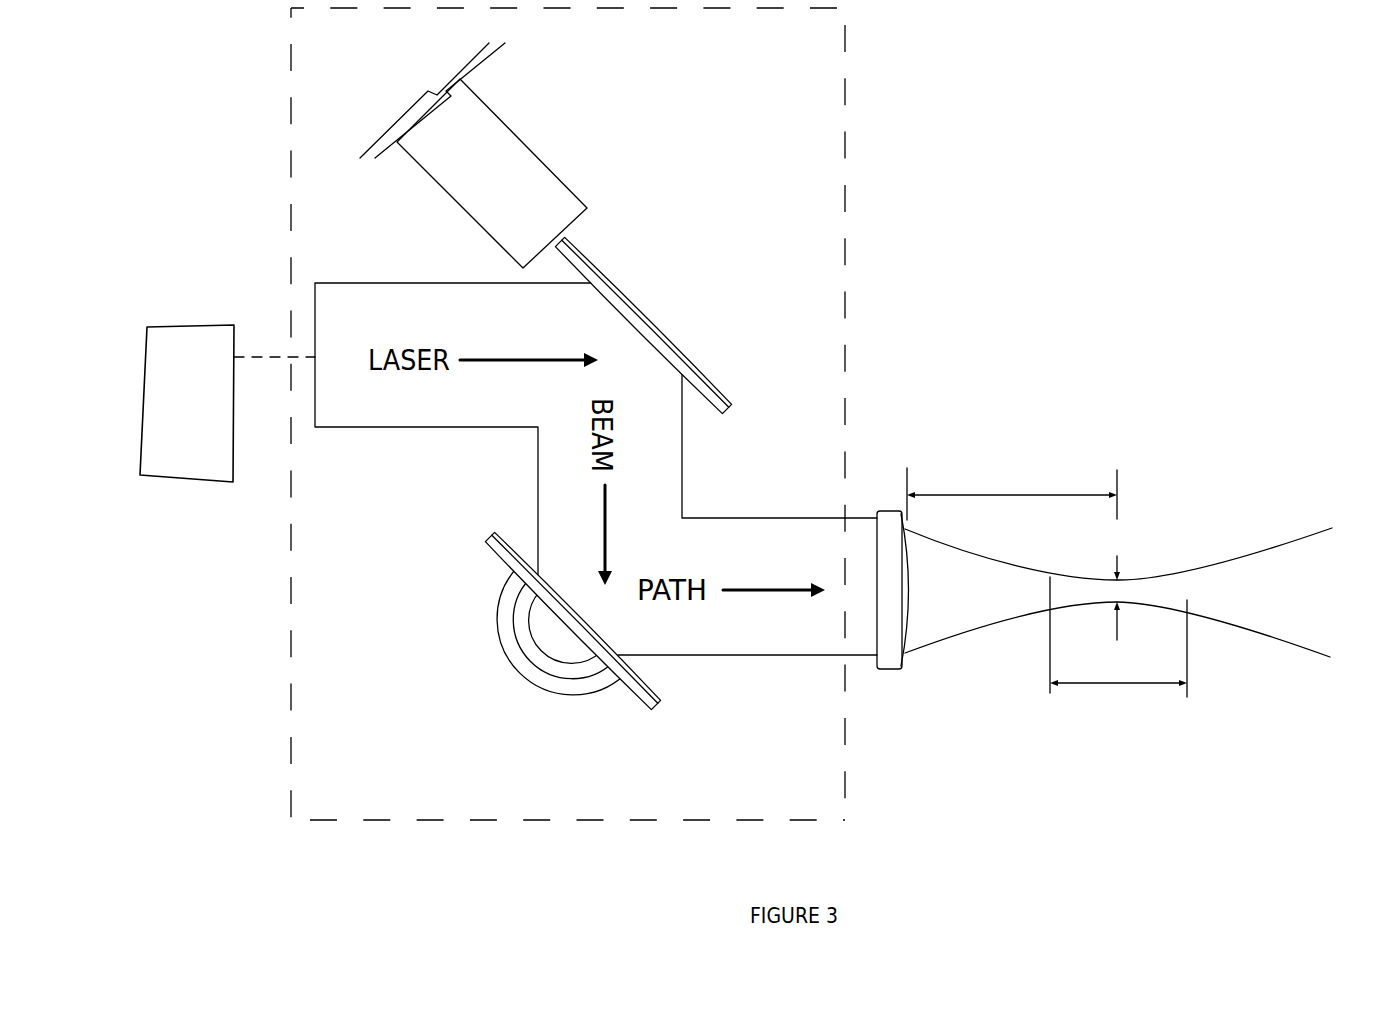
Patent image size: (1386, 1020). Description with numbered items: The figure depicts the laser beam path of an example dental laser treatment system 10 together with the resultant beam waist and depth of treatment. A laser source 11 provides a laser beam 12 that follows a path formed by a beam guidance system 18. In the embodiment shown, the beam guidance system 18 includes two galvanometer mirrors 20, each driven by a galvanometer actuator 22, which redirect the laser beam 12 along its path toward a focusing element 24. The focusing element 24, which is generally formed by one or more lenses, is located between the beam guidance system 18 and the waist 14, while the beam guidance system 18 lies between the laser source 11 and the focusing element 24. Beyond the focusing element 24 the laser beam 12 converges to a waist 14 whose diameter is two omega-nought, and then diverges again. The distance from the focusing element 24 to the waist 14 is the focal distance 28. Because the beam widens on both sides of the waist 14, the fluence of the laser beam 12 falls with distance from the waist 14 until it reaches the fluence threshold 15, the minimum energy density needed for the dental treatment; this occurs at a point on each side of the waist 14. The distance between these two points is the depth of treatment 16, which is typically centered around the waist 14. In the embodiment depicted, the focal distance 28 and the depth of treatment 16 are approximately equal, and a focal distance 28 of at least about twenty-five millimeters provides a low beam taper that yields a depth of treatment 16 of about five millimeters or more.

The dental laser treatment system 10 is at (1062, 187).
The laser source 11 is at (226, 323).
The laser beam 12 is at (928, 643).
The waist 14 is at (1121, 580).
The fluence threshold 15 is at (1050, 604).
The depth of treatment 16 is at (1100, 685).
The beam guidance system 18 is at (845, 280).
The galvanometer mirrors 20 is at (650, 310).
The galvanometer actuators 22 is at (545, 165).
The focusing element 24 is at (890, 511).
The focal distance 28 is at (992, 490).